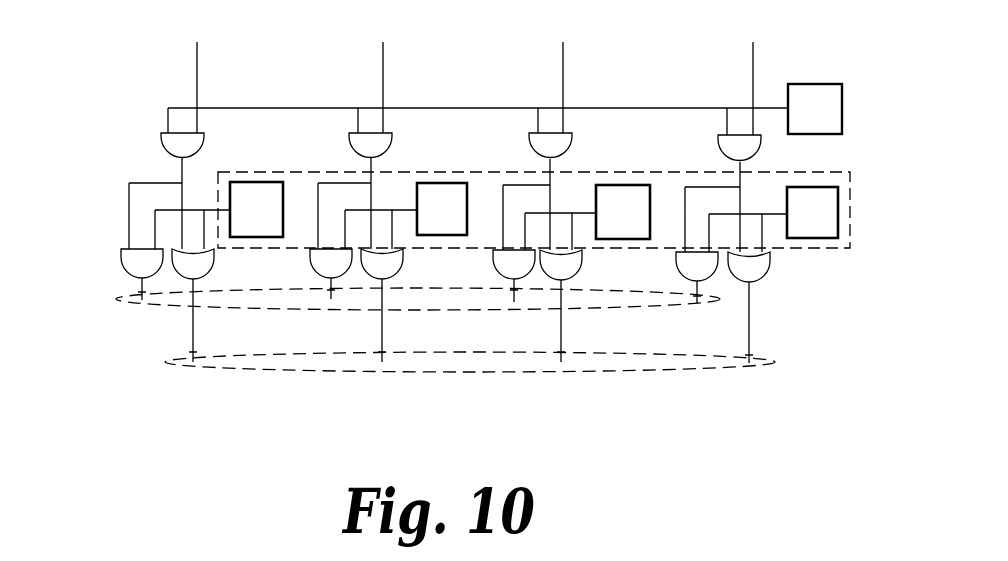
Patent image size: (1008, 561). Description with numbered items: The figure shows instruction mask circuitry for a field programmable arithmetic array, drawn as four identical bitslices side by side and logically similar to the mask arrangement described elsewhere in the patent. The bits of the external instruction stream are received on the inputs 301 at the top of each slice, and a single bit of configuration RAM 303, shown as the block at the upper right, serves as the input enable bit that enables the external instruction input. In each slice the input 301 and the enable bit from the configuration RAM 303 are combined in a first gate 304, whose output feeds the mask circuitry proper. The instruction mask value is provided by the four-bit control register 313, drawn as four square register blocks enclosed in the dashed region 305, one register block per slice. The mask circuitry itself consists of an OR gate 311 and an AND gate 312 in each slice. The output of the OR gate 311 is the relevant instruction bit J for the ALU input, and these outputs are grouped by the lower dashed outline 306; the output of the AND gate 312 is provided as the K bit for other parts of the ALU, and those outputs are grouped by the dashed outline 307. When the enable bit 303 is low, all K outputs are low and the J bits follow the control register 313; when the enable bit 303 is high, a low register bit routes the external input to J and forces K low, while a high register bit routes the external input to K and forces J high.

The inputs 301 is at (476, 72).
The configuration RAM 303 is at (836, 109).
The AND gate 304 is at (439, 145).
The register group 305 is at (835, 271).
The output bus 306 is at (608, 362).
The output bus 307 is at (258, 292).
The OR gate 311 is at (485, 306).
The AND gate 312 is at (404, 276).
The control register 313 is at (812, 182).